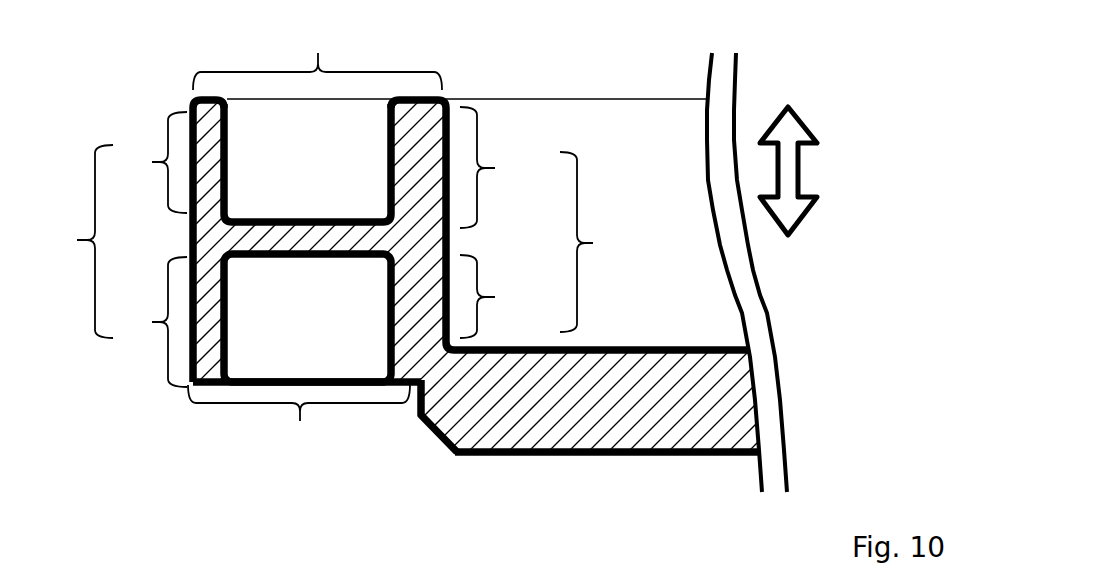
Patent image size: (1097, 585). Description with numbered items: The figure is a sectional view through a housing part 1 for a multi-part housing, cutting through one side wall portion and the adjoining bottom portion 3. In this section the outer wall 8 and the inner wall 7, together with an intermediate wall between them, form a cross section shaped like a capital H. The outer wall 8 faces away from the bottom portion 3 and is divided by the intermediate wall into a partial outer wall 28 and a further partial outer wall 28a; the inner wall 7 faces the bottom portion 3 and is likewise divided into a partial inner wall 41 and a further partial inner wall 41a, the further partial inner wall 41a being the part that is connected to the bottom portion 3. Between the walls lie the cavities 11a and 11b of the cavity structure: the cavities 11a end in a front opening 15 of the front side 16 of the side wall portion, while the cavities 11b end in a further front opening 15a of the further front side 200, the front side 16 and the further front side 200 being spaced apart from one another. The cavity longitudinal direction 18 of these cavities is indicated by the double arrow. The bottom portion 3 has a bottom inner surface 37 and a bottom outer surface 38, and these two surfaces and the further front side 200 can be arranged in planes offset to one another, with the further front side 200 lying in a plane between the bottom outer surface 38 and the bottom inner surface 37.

The housing part 1 is at (112, 60).
The bottom portion 3 is at (708, 405).
The inner wall 7 is at (594, 242).
The outer wall 8 is at (79, 241).
The cavities 11a is at (305, 155).
The cavities 11b is at (323, 332).
The front opening 15 is at (322, 98).
The further front opening 15a is at (260, 382).
The front side 16 is at (317, 49).
The cavity longitudinal direction 18 is at (797, 136).
The partial outer wall 28 is at (144, 162).
The further partial outer wall 28a is at (144, 322).
The bottom inner surface 37 is at (690, 345).
The bottom outer surface 38 is at (627, 457).
The partial inner wall 41 is at (506, 167).
The further partial inner wall 41a is at (514, 296).
The further front side 200 is at (299, 428).